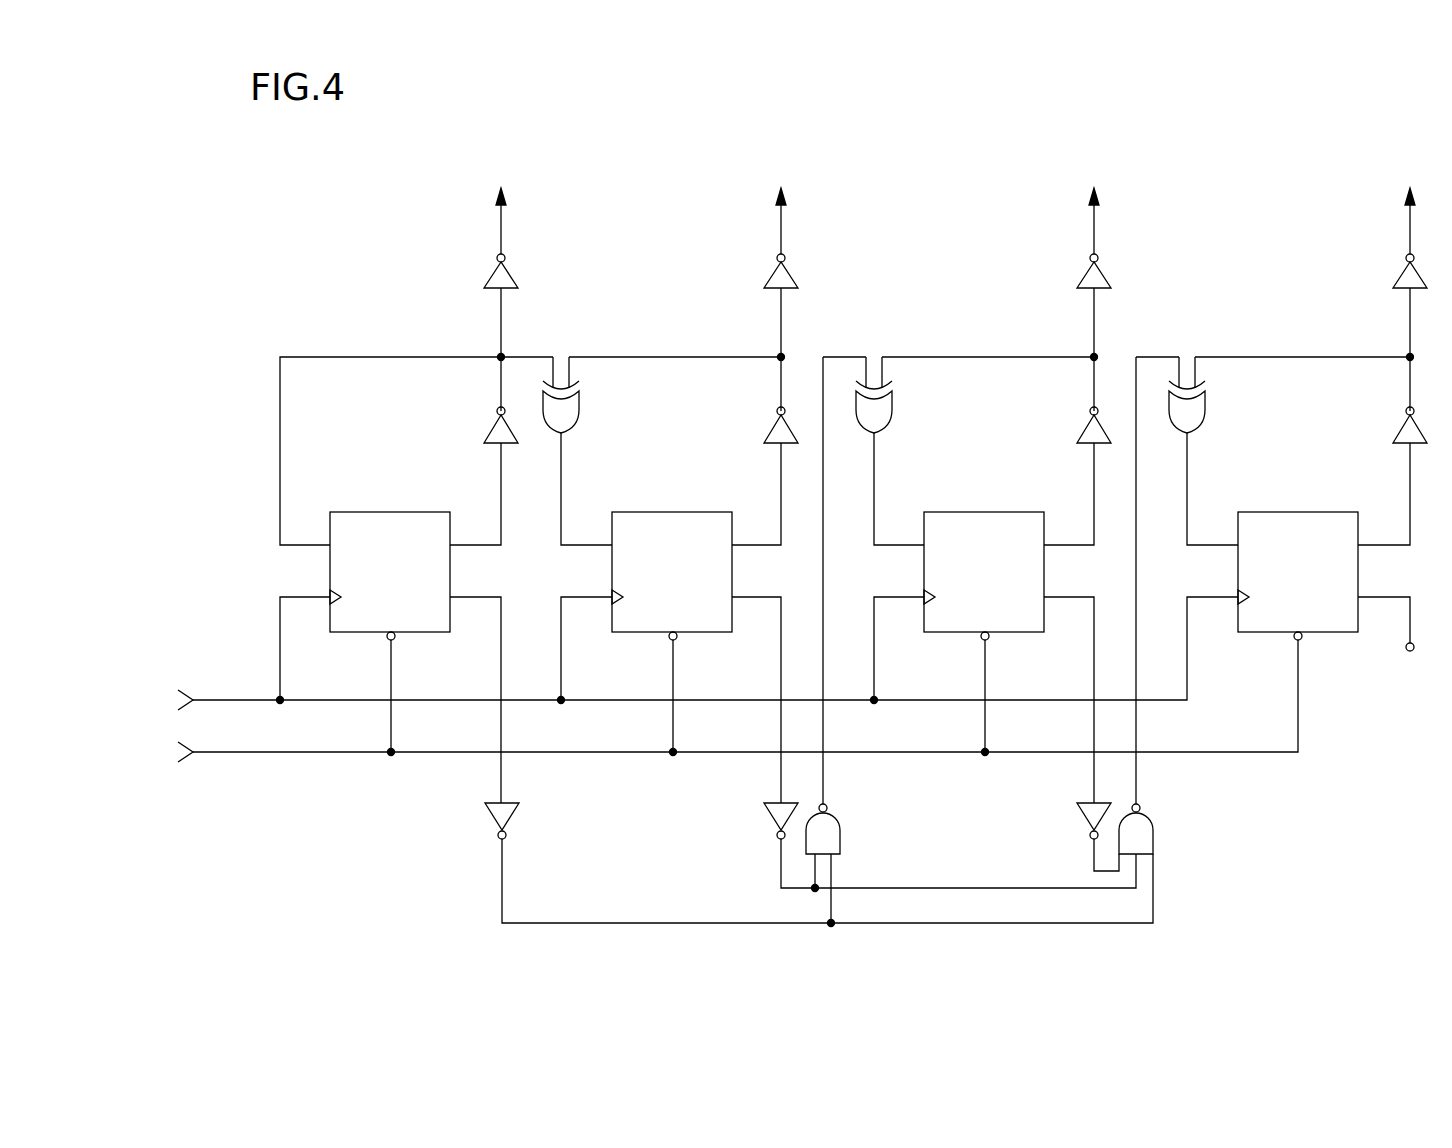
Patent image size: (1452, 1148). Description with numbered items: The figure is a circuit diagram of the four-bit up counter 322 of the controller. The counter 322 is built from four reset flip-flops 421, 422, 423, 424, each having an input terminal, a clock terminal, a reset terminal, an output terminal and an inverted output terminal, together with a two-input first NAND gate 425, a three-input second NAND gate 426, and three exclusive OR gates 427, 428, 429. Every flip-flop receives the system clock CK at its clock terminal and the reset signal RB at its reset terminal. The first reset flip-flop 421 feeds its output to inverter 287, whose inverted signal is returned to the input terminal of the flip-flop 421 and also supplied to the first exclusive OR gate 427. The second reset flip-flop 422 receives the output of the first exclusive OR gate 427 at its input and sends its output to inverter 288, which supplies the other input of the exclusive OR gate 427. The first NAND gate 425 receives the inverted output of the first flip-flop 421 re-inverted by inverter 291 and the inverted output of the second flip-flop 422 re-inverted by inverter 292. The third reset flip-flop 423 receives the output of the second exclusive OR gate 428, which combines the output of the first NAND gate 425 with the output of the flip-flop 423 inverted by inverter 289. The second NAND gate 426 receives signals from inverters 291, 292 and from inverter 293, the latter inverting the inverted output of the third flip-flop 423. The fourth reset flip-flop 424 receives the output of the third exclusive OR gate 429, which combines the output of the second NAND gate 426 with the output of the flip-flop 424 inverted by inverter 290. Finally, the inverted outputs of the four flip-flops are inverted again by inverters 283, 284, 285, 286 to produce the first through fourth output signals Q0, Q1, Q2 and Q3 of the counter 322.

The 4-bit up counter 322 is at (338, 220).
The inverter 283 is at (487, 280).
The inverter 284 is at (767, 280).
The inverter 285 is at (1079, 280).
The inverter 286 is at (1396, 280).
The inverter 287 is at (487, 433).
The inverter 288 is at (767, 433).
The inverter 289 is at (1079, 433).
The inverter 290 is at (1396, 433).
The inverter 291 is at (487, 821).
The inverter 292 is at (766, 821).
The inverter 293 is at (1078, 821).
The first reset flip-flop 421 is at (389, 512).
The second reset flip-flop 422 is at (671, 512).
The third reset flip-flop 423 is at (984, 512).
The fourth reset flip-flop 424 is at (1297, 512).
The first NAND gate 425 is at (842, 838).
The second NAND gate 426 is at (1155, 838).
The first exclusive OR gate 427 is at (581, 412).
The second exclusive OR gate 428 is at (894, 412).
The third exclusive OR gate 429 is at (1207, 412).